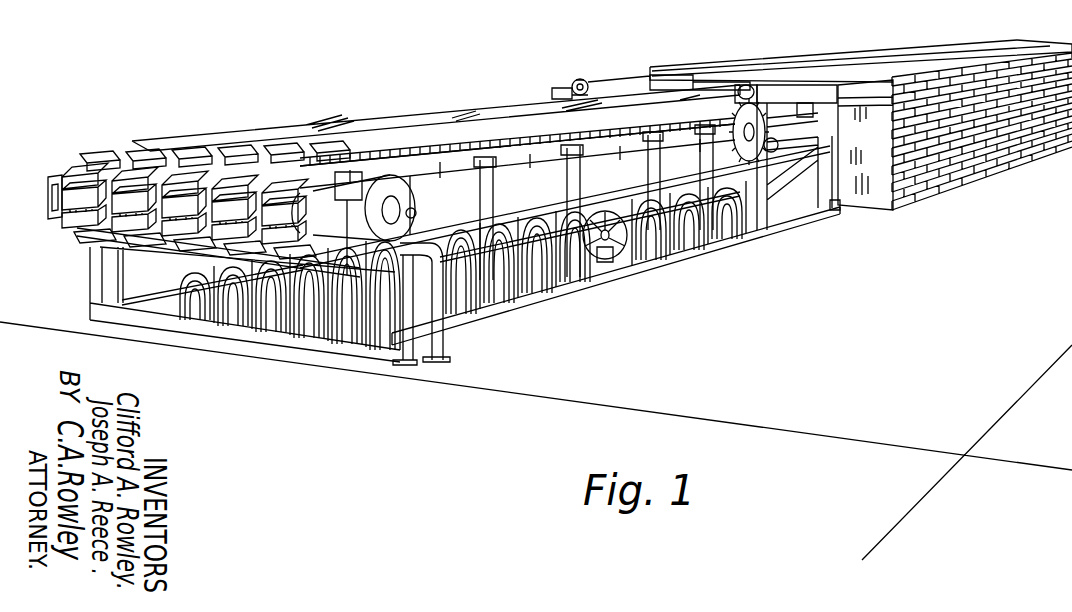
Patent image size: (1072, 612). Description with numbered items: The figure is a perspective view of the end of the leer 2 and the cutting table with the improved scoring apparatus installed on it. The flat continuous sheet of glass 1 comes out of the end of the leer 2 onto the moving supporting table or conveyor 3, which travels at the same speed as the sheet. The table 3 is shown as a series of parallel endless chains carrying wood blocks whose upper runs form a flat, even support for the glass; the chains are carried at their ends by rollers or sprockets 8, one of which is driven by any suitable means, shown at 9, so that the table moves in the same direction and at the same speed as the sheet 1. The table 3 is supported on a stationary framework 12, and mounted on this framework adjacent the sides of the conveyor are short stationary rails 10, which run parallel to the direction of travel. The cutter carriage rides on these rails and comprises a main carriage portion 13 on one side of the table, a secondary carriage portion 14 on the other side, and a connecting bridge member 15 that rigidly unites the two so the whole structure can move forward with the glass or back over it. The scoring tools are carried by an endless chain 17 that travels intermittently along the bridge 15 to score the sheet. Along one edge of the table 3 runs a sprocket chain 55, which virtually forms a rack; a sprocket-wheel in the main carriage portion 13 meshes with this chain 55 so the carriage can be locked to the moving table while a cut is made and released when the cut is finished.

The flat continuous sheet of glass 1 is at (525, 103).
The leer 2 is at (820, 55).
The supporting table or conveyor 3 is at (98, 152).
The rollers or sprockets 8 is at (325, 177).
The driving means 9 is at (408, 195).
The stationary rails 10 is at (718, 100).
The stationary framework 12 is at (645, 237).
The main carriage portion 13 is at (753, 208).
The secondary carriage portion 14 is at (558, 88).
The connecting bridge member 15 is at (620, 87).
The endless chain 17 is at (588, 80).
The sprocket chain 55 is at (517, 150).